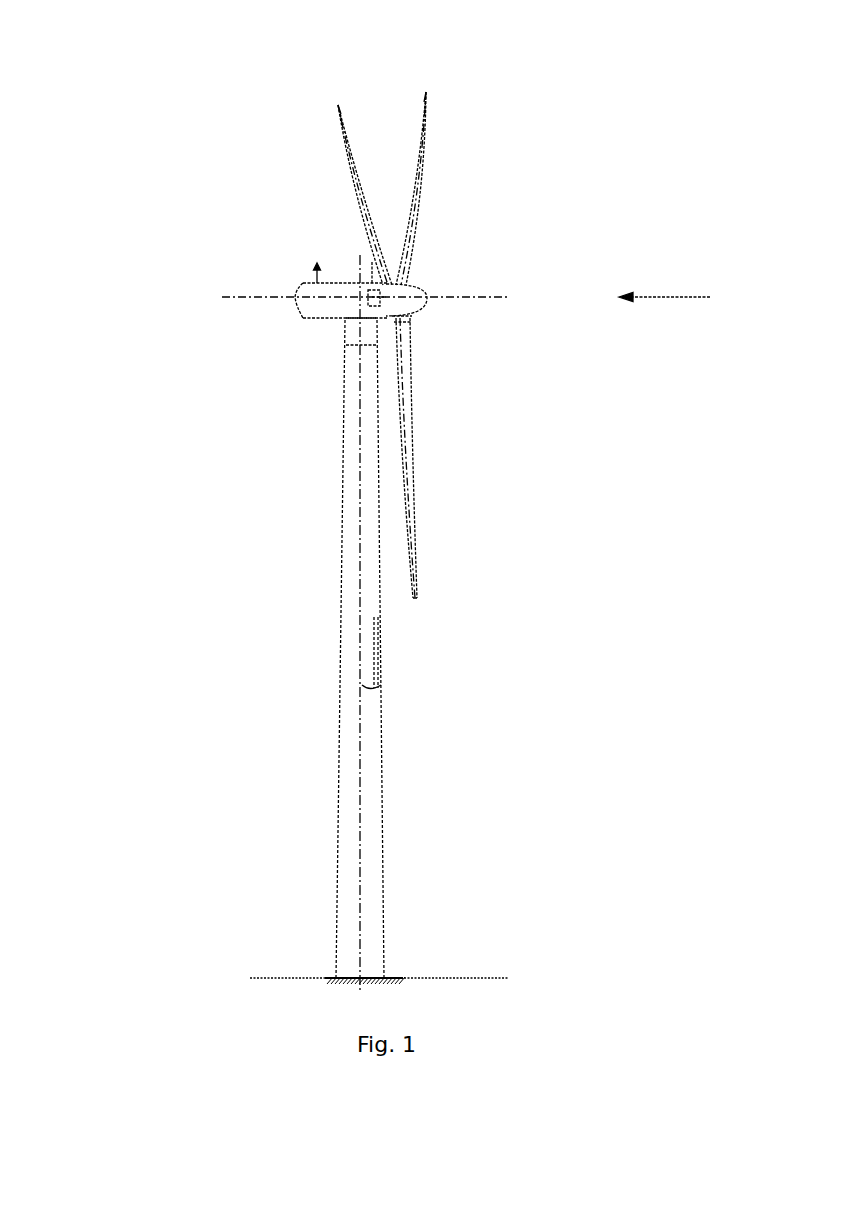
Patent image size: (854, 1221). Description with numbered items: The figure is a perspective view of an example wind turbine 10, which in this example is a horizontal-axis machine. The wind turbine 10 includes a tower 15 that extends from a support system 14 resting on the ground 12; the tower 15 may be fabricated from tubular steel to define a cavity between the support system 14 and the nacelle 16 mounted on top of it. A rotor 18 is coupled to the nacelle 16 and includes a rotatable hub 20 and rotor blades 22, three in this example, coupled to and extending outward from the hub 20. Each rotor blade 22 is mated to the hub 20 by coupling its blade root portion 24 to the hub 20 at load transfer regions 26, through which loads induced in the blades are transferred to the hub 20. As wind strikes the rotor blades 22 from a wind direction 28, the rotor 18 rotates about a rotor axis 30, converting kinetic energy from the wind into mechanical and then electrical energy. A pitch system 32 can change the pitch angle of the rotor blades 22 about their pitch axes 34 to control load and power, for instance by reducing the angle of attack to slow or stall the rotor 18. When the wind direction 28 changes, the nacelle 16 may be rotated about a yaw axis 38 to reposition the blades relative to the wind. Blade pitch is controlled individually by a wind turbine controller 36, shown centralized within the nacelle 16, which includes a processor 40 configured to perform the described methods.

The wind turbine 10 is at (152, 112).
The ground 12 is at (270, 978).
The support system 14 is at (328, 978).
The tower 15 is at (356, 624).
The nacelle 16 is at (322, 319).
The rotor 18 is at (436, 212).
The rotatable hub 20 is at (421, 292).
The rotor blade 22 is at (355, 168).
The blade root portion 24 is at (417, 389).
The load transfer regions 26 is at (400, 318).
The wind direction 28 is at (683, 297).
The rotor axis 30 is at (480, 299).
The pitch system 32 is at (396, 340).
The pitch axes 34 is at (337, 107).
The wind turbine controller 36 is at (364, 333).
The yaw axis 38 is at (388, 684).
The processor 40 is at (371, 260).